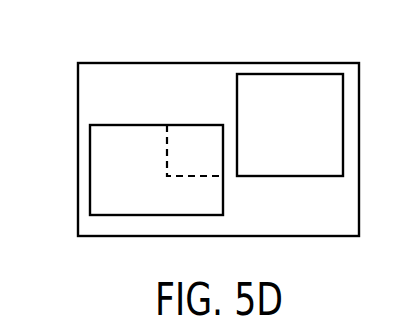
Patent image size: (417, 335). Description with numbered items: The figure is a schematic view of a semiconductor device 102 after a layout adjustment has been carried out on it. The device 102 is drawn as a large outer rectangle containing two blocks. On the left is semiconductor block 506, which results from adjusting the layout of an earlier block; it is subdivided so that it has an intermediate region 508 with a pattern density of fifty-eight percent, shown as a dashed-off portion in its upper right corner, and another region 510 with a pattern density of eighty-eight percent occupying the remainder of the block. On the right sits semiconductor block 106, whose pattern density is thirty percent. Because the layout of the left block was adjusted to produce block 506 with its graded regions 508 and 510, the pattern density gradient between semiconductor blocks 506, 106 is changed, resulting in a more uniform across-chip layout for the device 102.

The semiconductor device 102 is at (98, 62).
The semiconductor block 106 is at (343, 137).
The semiconductor block 506 is at (90, 183).
The intermediate region 508 is at (167, 144).
The region 510 is at (162, 203).